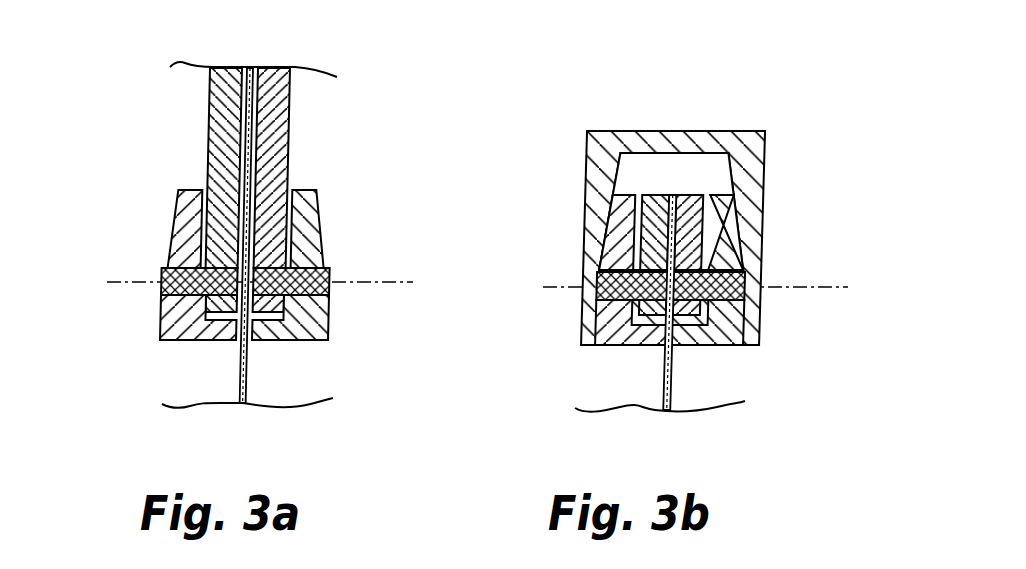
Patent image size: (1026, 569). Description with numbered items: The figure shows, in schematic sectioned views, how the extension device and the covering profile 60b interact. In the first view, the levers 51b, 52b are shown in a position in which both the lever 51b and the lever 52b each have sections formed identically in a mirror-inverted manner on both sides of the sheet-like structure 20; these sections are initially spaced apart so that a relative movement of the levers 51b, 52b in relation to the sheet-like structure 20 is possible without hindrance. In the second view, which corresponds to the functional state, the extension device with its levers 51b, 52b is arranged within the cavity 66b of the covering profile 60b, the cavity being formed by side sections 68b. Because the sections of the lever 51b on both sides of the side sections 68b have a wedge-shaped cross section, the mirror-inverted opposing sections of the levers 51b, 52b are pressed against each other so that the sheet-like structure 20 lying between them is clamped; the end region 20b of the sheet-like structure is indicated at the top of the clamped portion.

In FIG. 3a, the sheet-like structure 20 is at (247, 382).
In FIG. 3b, the sheet-like structure 20 is at (673, 374).
In FIG. 3b, the end of optical fiber 20b is at (672, 194).
In FIG. 3a, the lever 51b is at (163, 318).
In FIG. 3b, the lever 51b is at (612, 342).
In FIG. 3a, the lever 52b is at (213, 188).
In FIG. 3b, the lever 52b is at (620, 243).
In FIG. 3b, the covering profile 60b is at (683, 133).
In FIG. 3b, the cavity 66b is at (640, 167).
In FIG. 3b, the side sections 68b is at (597, 274).